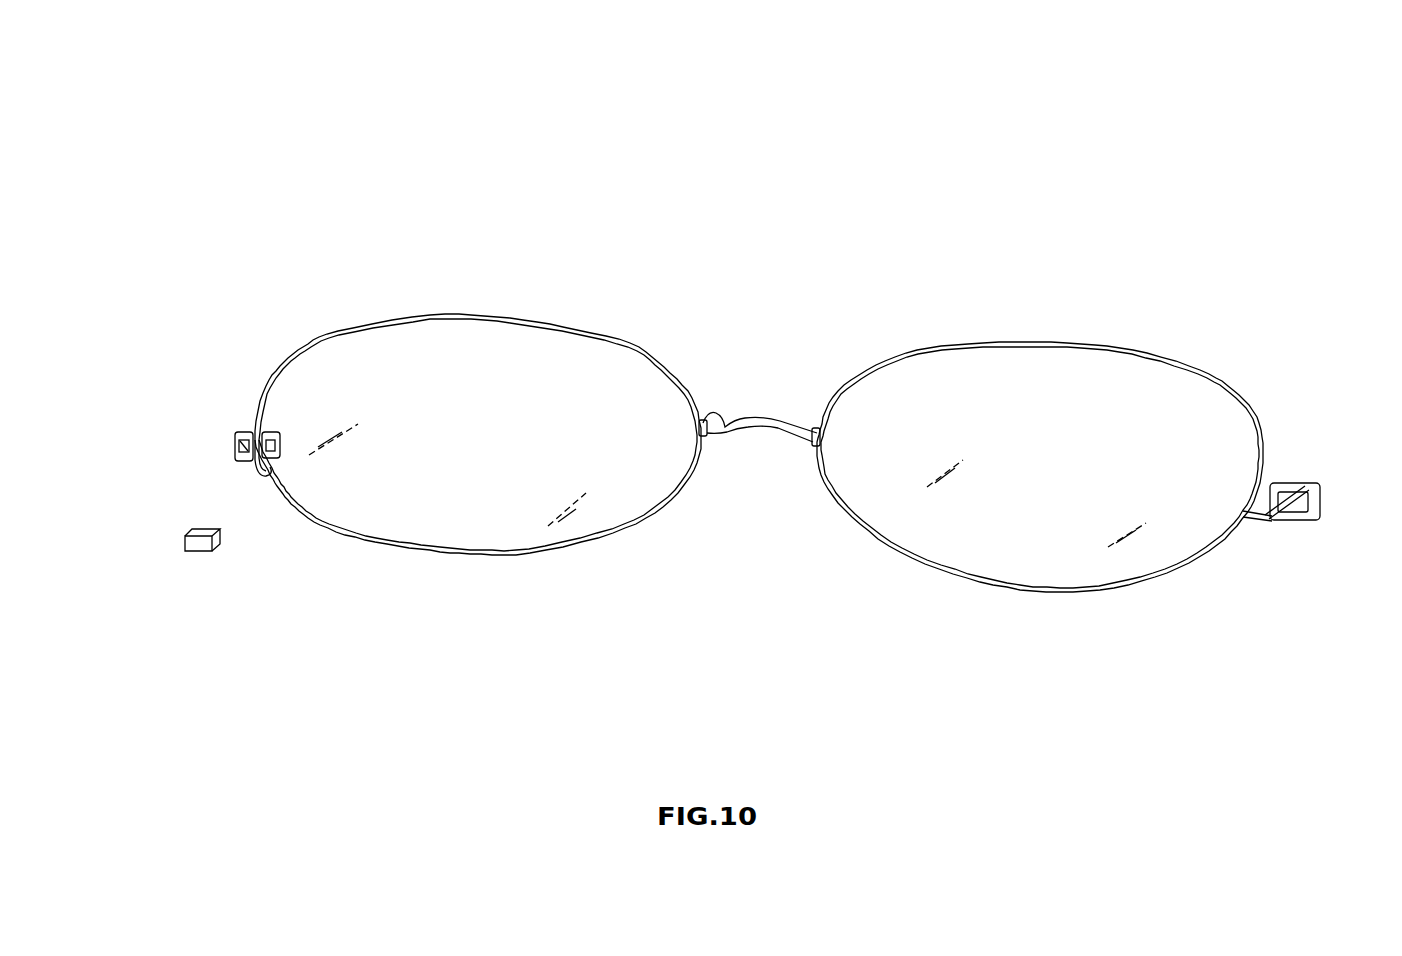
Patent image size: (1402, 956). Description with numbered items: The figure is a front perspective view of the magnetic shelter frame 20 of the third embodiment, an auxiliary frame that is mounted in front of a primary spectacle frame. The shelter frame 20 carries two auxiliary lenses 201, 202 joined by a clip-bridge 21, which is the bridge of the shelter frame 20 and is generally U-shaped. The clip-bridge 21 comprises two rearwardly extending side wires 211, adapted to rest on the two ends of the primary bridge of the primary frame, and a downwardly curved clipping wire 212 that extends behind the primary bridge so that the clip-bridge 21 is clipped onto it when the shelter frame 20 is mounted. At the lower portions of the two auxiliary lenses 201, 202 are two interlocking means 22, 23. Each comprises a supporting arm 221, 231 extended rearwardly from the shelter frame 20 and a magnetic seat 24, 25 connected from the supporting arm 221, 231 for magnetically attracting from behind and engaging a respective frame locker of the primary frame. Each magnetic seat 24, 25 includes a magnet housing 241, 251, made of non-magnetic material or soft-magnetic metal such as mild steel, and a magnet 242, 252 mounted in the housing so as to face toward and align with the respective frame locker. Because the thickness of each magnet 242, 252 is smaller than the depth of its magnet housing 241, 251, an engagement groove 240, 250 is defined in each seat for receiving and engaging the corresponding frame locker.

The magnetic shelter frame 20 is at (918, 205).
The clip-bridge 21 is at (783, 380).
The side wires 211 is at (705, 405).
The clipping wire 212 is at (778, 432).
The auxiliary lens 201 is at (500, 522).
The auxiliary lens 202 is at (1060, 574).
The interlocking means 22 is at (1276, 505).
The supporting arm 221 is at (1238, 452).
The interlocking means 23 is at (246, 456).
The supporting arm 231 is at (268, 440).
The magnetic seat 24 is at (1314, 467).
The engagement groove 240 is at (1274, 554).
The magnet housing 241 is at (1315, 490).
The magnet 242 is at (1300, 502).
The magnetic seat 25 is at (206, 406).
The engagement groove 250 is at (211, 475).
The magnet housing 251 is at (235, 437).
The magnet 252 is at (158, 573).